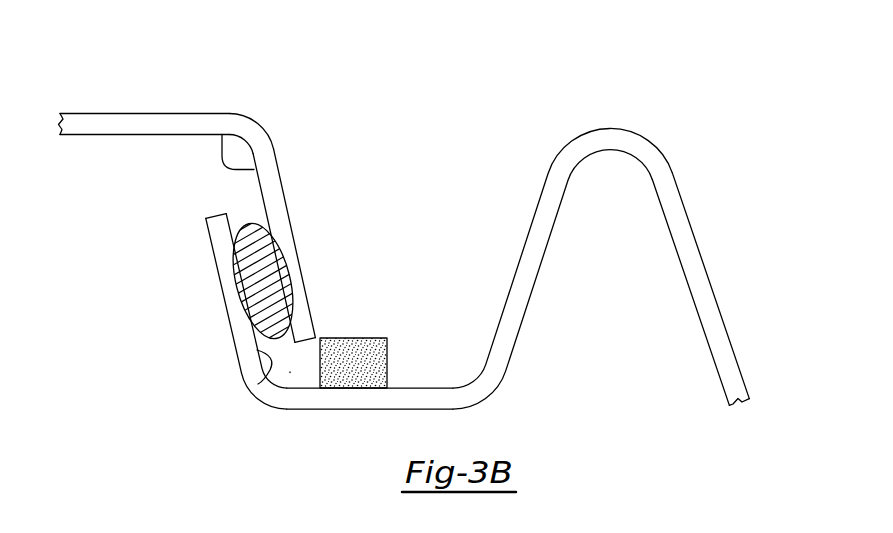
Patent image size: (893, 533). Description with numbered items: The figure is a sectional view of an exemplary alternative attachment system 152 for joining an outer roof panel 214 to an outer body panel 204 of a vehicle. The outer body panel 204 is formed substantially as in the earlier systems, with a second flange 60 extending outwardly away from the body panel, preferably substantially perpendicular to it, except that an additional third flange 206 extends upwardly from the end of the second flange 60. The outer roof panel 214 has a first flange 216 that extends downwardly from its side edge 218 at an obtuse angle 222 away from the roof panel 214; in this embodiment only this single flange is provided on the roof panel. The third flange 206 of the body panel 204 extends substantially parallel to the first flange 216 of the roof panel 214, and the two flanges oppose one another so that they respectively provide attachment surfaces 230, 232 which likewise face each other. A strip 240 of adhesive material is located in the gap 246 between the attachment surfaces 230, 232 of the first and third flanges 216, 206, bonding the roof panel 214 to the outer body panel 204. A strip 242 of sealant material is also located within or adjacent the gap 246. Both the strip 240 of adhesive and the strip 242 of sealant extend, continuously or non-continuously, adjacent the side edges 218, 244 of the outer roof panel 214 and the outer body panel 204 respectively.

The side edge 218 is at (208, 176).
The outer roof panel 214 is at (152, 114).
The first flange 216 is at (272, 141).
The attachment surface 230 is at (307, 298).
The obtuse angle 222 is at (222, 152).
The attachment system 152 is at (481, 244).
The third flange 206 is at (227, 311).
The second flange 60 is at (332, 409).
The side edge 244 is at (722, 181).
The outer body panel 204 is at (715, 297).
The attachment surface 232 is at (270, 362).
The gap 246 is at (290, 372).
The strip of adhesive material 240 is at (248, 263).
The strip of sealant material 242 is at (358, 370).